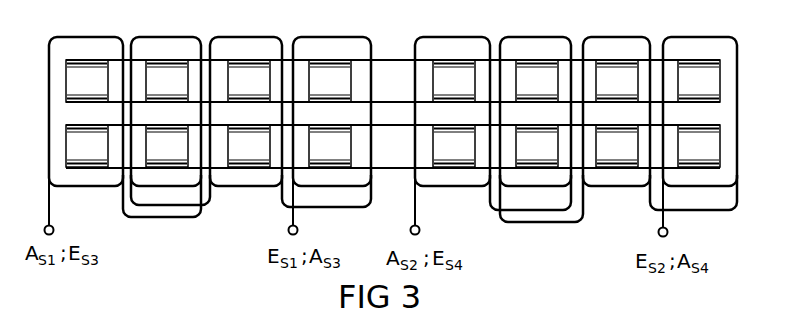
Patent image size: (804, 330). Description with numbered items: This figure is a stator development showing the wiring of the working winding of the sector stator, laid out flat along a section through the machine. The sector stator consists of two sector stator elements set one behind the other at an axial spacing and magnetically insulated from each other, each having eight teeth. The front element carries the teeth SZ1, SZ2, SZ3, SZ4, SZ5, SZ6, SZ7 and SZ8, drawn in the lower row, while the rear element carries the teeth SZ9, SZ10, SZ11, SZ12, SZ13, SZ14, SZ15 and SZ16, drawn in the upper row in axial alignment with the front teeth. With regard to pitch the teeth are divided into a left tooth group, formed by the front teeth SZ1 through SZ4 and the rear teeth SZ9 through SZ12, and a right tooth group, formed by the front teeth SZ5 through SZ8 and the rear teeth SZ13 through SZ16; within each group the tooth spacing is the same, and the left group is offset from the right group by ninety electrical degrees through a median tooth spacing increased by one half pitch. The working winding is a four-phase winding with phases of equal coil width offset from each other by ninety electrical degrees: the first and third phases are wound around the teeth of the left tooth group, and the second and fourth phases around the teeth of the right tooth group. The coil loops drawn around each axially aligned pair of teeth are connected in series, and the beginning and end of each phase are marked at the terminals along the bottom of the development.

The tooth SZ1 is at (87, 146).
The tooth SZ2 is at (167, 146).
The tooth SZ3 is at (249, 146).
The tooth SZ4 is at (330, 146).
The tooth SZ5 is at (454, 146).
The tooth SZ6 is at (537, 146).
The tooth SZ7 is at (617, 146).
The tooth SZ8 is at (699, 146).
The tooth SZ9 is at (87, 81).
The tooth SZ10 is at (167, 81).
The tooth SZ11 is at (249, 81).
The tooth SZ12 is at (330, 81).
The tooth SZ13 is at (454, 81).
The tooth SZ14 is at (537, 81).
The tooth SZ15 is at (617, 81).
The tooth SZ16 is at (699, 81).